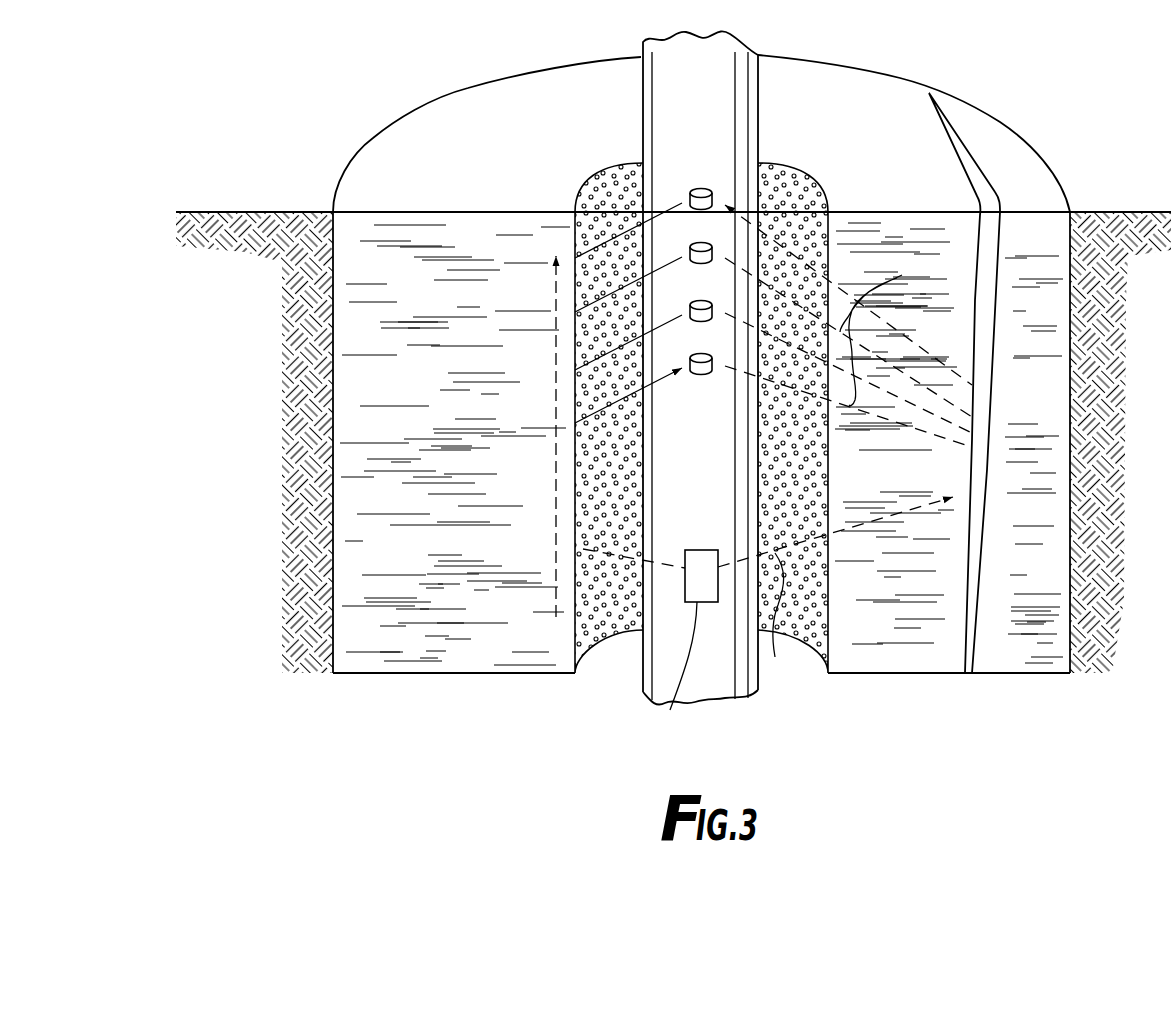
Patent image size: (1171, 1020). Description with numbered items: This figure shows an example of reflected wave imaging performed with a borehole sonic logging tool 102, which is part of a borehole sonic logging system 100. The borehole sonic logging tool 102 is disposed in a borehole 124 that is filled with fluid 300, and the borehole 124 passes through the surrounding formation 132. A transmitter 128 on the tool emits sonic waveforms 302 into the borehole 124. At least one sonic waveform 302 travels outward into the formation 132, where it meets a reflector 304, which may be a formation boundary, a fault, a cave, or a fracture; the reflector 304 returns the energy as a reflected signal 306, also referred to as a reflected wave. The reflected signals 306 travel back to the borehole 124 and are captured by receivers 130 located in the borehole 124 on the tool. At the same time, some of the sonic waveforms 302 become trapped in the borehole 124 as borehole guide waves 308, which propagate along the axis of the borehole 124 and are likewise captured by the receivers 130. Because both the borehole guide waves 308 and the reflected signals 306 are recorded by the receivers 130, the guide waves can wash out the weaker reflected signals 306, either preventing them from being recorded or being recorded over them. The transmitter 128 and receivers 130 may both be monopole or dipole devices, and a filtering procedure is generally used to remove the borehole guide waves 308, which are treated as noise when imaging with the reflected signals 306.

The borehole sonic logging system 100 is at (740, 702).
The borehole sonic logging tool 102 is at (760, 123).
The borehole 124 is at (605, 660).
The transmitter 128 is at (663, 673).
The receivers 130 is at (690, 243).
The formation 132 is at (920, 591).
The fluid 300 is at (632, 481).
The sonic waveforms 302 is at (570, 544).
The reflector 304 is at (995, 291).
The reflected signal 306 is at (848, 326).
The borehole guide waves 308 is at (557, 448).